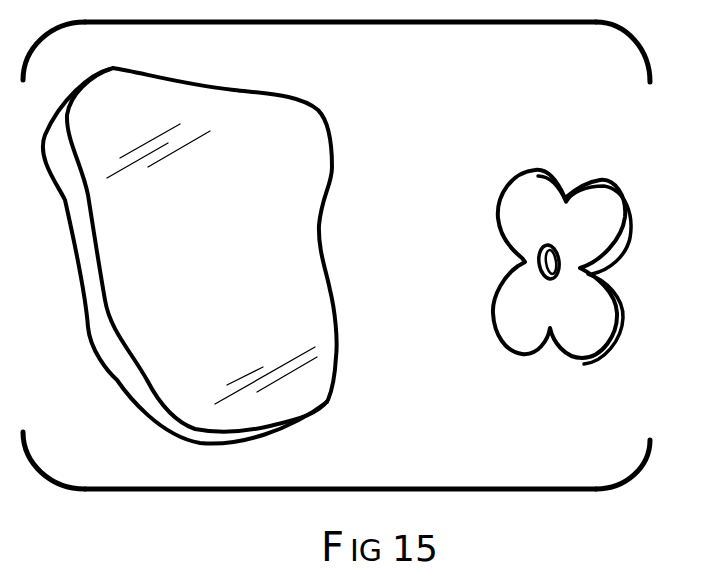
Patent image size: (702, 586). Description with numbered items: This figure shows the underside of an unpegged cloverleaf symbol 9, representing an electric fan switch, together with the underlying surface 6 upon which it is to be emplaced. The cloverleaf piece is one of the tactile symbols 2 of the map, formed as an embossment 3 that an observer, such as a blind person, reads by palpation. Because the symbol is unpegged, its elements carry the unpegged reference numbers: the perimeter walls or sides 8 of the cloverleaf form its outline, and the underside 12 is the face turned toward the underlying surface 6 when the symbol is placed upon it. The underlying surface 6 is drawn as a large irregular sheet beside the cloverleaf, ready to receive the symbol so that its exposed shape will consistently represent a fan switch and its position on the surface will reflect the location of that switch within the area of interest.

The underlying surface 6 is at (270, 144).
The underside 12 is at (532, 195).
The perimeter walls or sides 8 is at (562, 183).
The tactile symbol 2 is at (525, 283).
The embossment 3 is at (525, 283).
The unpegged cloverleaf symbol 9 is at (525, 283).